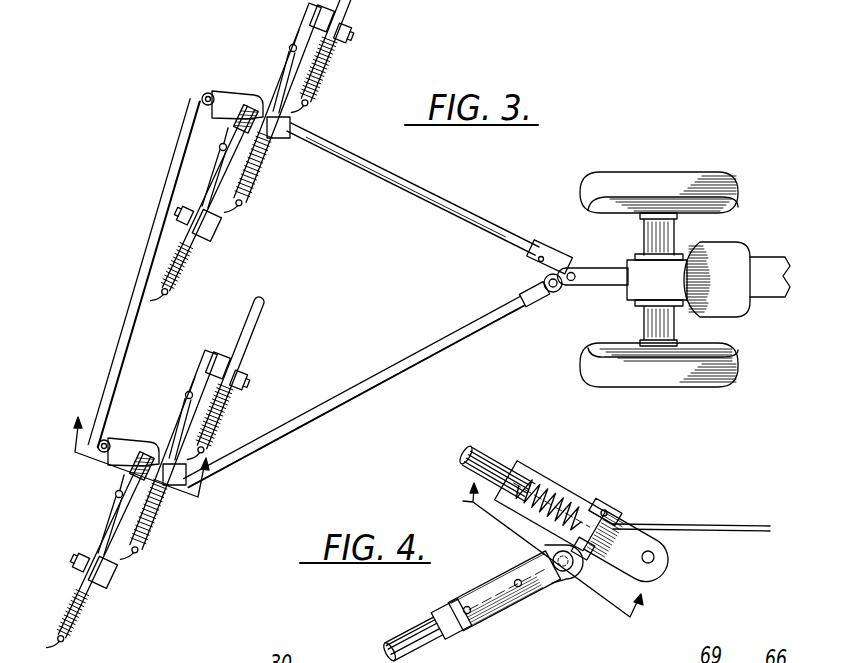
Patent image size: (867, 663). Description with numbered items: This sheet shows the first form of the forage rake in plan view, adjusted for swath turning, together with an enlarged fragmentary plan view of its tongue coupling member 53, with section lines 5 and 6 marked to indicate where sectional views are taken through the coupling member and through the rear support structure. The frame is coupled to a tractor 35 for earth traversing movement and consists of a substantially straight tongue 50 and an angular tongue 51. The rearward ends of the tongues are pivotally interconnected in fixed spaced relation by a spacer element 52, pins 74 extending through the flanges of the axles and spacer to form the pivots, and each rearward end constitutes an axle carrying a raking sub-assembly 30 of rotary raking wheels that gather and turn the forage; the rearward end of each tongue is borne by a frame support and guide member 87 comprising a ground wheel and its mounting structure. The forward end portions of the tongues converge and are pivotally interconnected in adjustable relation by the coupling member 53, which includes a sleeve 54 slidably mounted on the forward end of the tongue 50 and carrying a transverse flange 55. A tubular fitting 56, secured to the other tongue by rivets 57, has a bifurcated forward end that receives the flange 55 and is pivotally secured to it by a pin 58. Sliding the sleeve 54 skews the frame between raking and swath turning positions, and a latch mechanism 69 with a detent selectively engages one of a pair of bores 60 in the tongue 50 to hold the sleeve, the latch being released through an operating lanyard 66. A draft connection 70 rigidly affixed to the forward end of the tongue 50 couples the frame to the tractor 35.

In FIG. 4, the section line 5- 5 is at (549, 561).
In FIG. 3, the section line 6- 6 is at (134, 471).
In FIG. 3, the raking sub-assembly 30 is at (324, 71).
In FIG. 3, the tractor 35 is at (767, 300).
In FIG. 3, the straight tongue 50 is at (378, 178).
In FIG. 3, the angular tongue 51 is at (435, 356).
In FIG. 3, the spacer element 52 is at (150, 266).
In FIG. 3, the coupling member 53 is at (548, 293).
In FIG. 4, the coupling member 53 is at (574, 488).
In FIG. 4, the sleeve 54 is at (535, 468).
In FIG. 4, the flange 55 is at (584, 557).
In FIG. 4, the tubular fitting 56 is at (500, 606).
In FIG. 4, the rivets 57 is at (515, 582).
In FIG. 4, the pin 58 is at (546, 549).
In FIG. 3, the bore 60 is at (461, 206).
In FIG. 3, the operating lanyard 66 is at (650, 270).
In FIG. 4, the operating lanyard 66 is at (738, 525).
In FIG. 3, the latch mechanism 69 is at (558, 261).
In FIG. 4, the latch mechanism 69 is at (598, 501).
In FIG. 3, the draft connection 70 is at (574, 268).
In FIG. 4, the draft connection 70 is at (670, 558).
In FIG. 3, the pin 74 is at (204, 93).
In FIG. 3, the frame support and guide member 87 is at (236, 96).